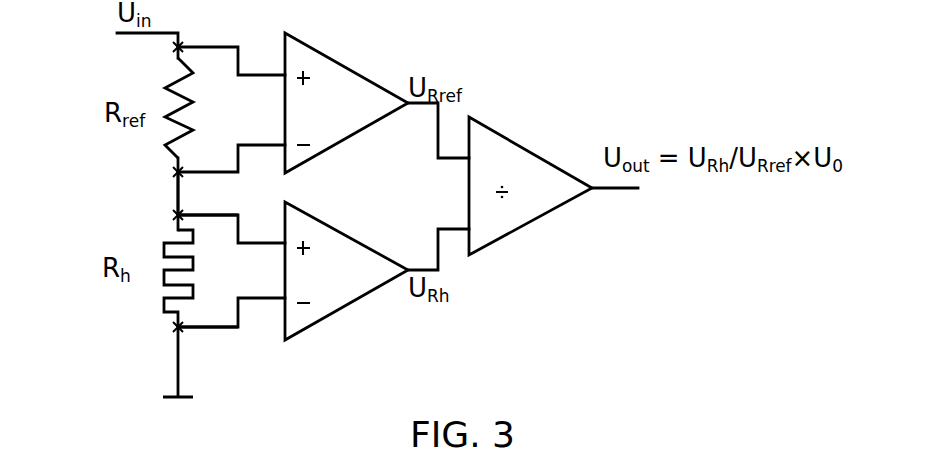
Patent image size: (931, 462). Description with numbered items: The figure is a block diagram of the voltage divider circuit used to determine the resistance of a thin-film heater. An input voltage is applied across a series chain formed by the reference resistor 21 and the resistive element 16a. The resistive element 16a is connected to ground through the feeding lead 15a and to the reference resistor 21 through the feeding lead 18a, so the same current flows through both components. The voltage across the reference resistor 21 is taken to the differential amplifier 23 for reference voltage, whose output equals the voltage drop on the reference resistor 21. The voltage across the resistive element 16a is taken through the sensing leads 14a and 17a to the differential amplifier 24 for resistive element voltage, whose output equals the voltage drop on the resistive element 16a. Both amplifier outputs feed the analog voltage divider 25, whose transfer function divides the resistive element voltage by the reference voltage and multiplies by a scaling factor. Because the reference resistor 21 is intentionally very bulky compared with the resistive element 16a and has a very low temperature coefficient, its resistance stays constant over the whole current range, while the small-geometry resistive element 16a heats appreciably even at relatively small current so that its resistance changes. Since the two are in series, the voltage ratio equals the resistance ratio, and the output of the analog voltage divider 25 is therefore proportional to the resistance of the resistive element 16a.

The reference resistor 21 is at (173, 79).
The feeding lead 18a is at (177, 196).
The resistive element 16a is at (183, 286).
The feeding lead 15a is at (179, 352).
The sensing lead 14a is at (203, 327).
The sensing lead 17a is at (212, 215).
The differential amplifier for reference voltage 23 is at (353, 100).
The differential amplifier for resistive element voltage 24 is at (347, 285).
The analog voltage divider 25 is at (508, 208).